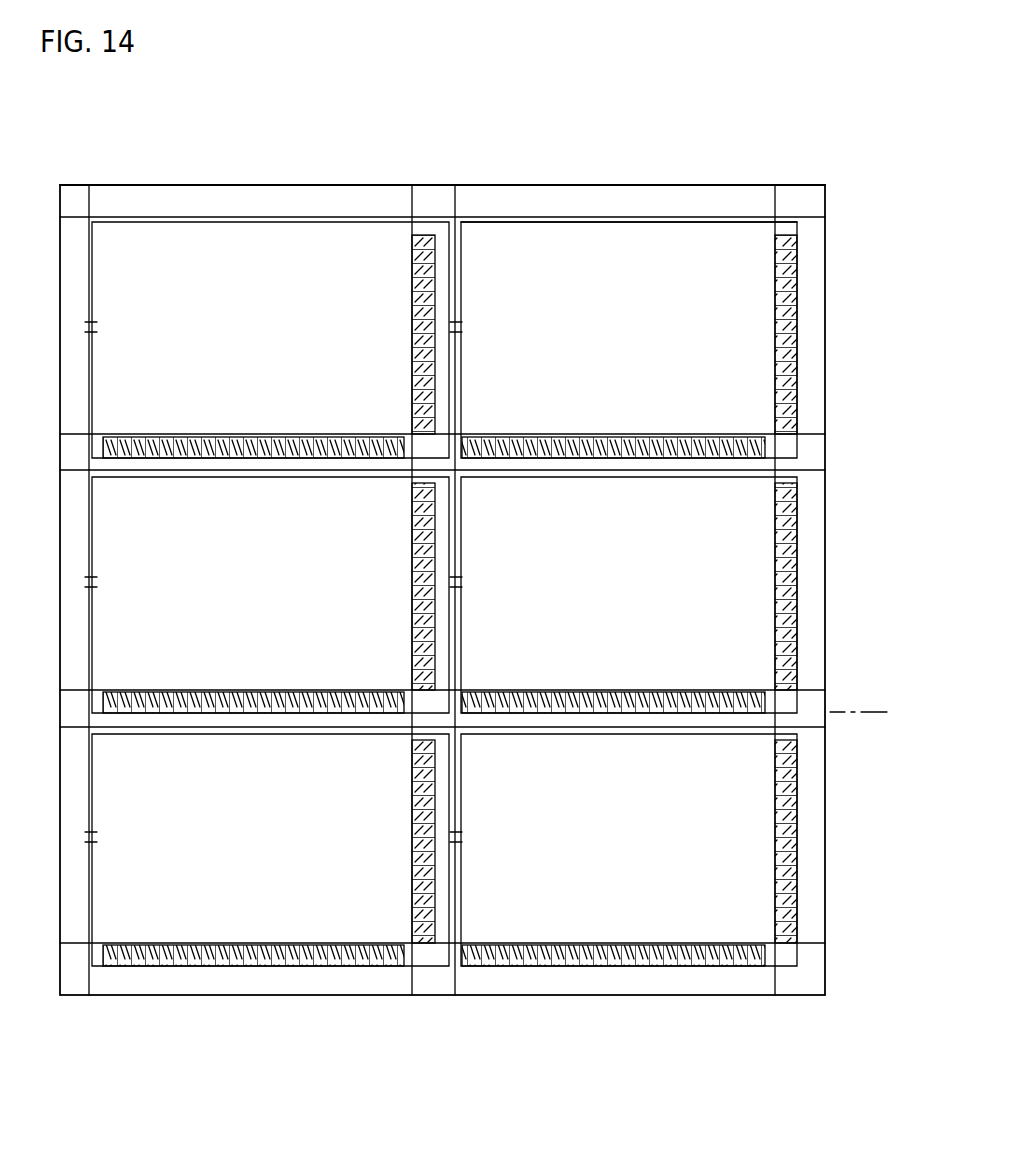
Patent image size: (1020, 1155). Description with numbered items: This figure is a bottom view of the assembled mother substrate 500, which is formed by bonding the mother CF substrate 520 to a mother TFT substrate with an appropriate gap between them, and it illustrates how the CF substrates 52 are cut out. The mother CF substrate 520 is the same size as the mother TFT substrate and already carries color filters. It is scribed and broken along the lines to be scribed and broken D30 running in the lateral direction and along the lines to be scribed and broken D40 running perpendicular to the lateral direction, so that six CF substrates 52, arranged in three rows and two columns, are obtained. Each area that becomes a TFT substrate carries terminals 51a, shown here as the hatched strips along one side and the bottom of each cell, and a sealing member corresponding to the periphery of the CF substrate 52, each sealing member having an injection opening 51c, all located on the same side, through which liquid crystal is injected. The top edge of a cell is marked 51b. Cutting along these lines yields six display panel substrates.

The assembled mother substrate 500 is at (492, 157).
The mother CF substrate 520 is at (231, 185).
The lines to be scribed and broken in the direction perpendicular to the lateral dir D40 is at (78, 185).
The lines to be scribed and broken in the lateral direction D30 is at (816, 441).
The CF substrate 52 is at (745, 822).
The terminals 51a is at (775, 292).
The top edge of cell frame 51b is at (586, 222).
The injection opening 51c is at (98, 330).